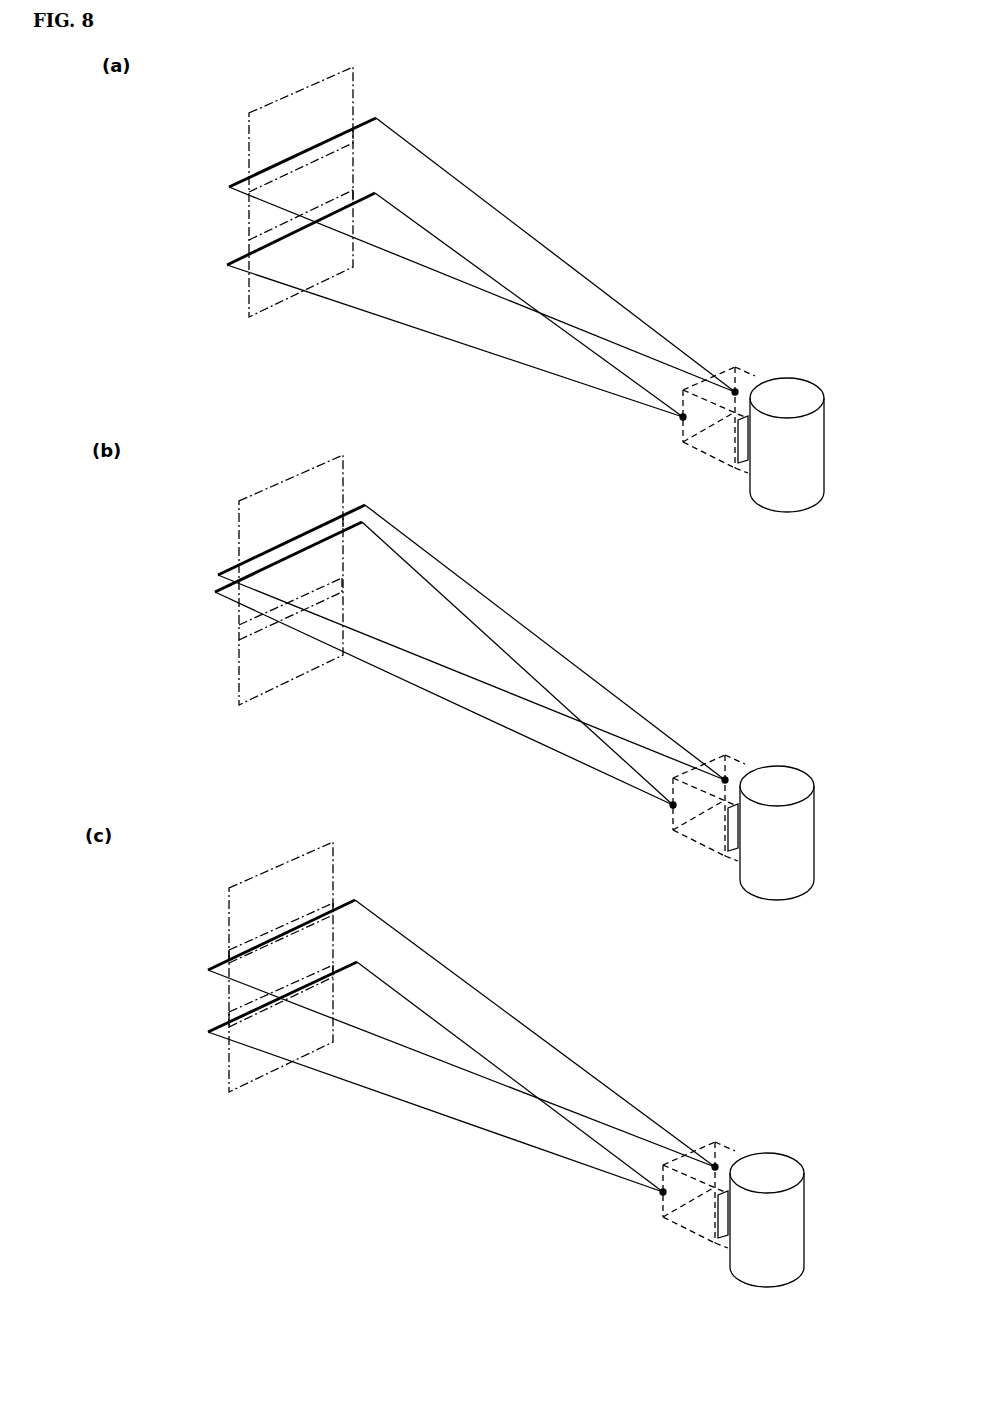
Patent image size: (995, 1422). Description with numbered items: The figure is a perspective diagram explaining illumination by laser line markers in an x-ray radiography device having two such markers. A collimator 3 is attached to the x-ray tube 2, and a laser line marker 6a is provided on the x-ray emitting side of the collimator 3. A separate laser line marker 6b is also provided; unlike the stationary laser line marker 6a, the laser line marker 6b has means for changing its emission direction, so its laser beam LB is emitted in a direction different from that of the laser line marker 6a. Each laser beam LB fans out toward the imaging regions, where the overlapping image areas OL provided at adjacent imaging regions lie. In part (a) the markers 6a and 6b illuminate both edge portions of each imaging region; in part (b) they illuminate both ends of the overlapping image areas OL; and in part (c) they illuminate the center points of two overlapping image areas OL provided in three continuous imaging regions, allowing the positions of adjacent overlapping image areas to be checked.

The x-ray tube 2 is at (820, 450).
The collimator 3 is at (695, 452).
The laser line marker 6a is at (742, 387).
The laser line marker 6b is at (680, 418).
The overlapping image area OL is at (332, 145).
The laser beam LB is at (505, 213).